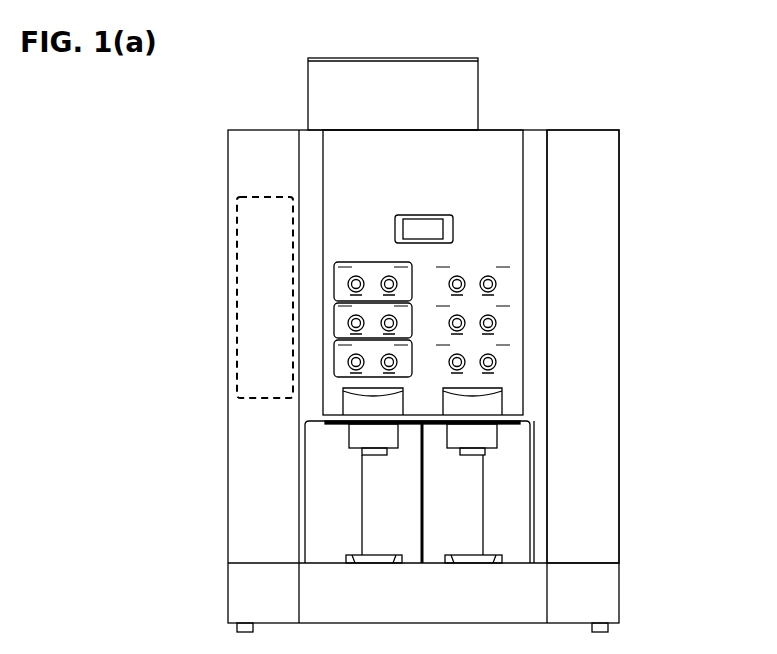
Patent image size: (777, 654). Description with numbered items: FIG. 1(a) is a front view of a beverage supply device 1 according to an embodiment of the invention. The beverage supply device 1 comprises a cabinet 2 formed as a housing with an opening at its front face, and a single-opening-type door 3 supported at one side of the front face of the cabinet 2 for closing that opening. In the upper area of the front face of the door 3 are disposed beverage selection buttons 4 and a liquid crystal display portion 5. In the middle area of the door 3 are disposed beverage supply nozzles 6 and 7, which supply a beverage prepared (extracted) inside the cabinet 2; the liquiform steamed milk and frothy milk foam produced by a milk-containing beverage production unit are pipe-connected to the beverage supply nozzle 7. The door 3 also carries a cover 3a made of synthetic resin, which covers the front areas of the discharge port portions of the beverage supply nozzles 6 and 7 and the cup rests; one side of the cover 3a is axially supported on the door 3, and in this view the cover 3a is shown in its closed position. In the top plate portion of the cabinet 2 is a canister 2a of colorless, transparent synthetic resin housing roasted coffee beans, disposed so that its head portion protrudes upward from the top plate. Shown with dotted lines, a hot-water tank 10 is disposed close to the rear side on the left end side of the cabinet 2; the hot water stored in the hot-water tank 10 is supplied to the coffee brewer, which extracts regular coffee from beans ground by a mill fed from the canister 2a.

The beverage supply device 1 is at (262, 106).
The cabinet 2 is at (565, 128).
The canister 2a is at (458, 89).
The door 3 is at (595, 214).
The cover 3a is at (463, 512).
The beverage selection buttons 4 is at (403, 312).
The liquid crystal display portion 5 is at (422, 225).
The beverage supply nozzle 6 is at (355, 440).
The beverage supply nozzle 7 is at (500, 431).
The hot-water tank 10 is at (257, 280).